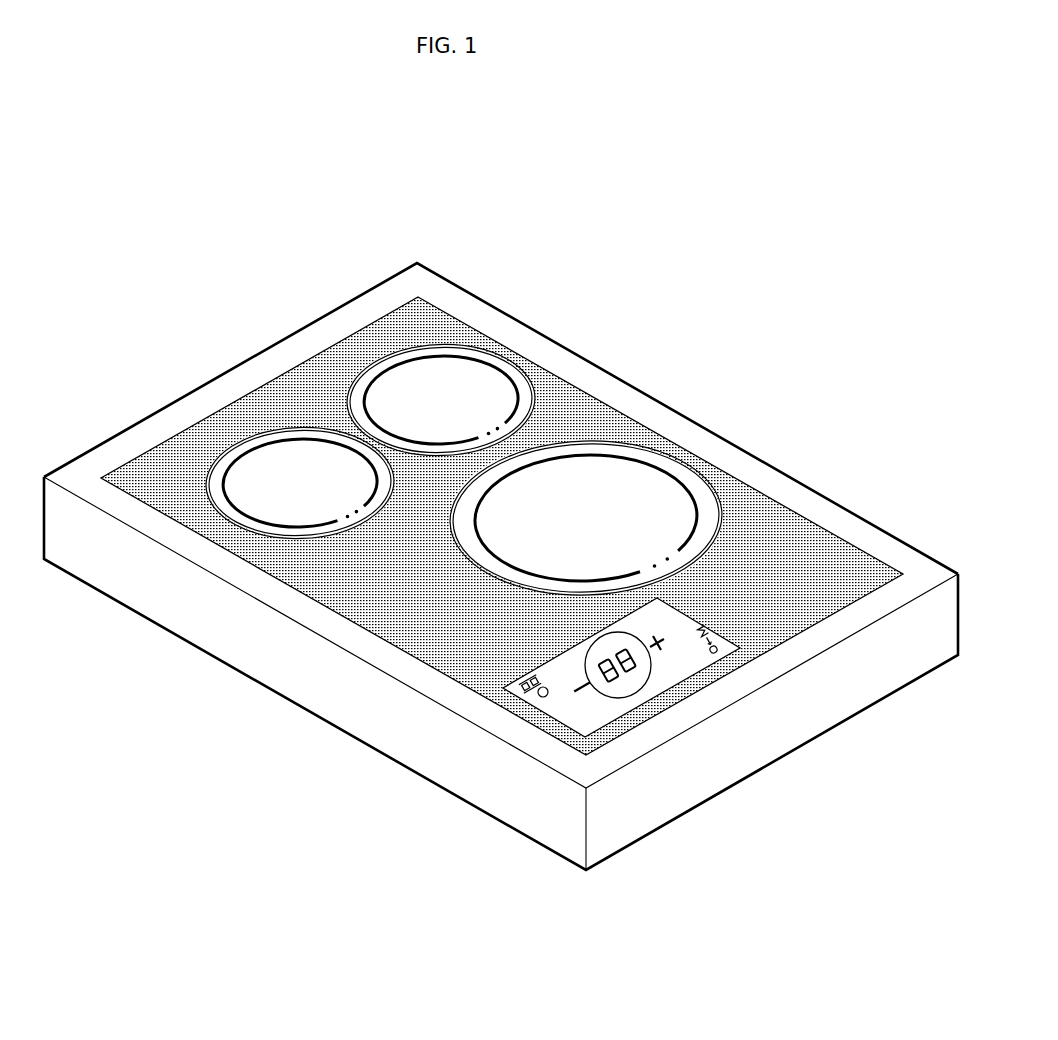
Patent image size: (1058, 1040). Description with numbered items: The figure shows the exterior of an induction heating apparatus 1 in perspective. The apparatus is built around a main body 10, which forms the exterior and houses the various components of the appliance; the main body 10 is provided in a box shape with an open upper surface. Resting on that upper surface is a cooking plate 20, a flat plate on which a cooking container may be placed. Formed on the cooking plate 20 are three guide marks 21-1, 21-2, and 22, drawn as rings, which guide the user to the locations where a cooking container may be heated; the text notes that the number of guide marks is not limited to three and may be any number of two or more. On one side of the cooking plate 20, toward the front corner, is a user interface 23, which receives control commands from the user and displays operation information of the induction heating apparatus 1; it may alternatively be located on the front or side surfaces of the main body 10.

The induction heating apparatus 1 is at (458, 148).
The main body 10 is at (330, 683).
The cooking plate 20 is at (570, 407).
The guide mark 21-1 is at (229, 448).
The guide mark 21-2 is at (375, 361).
The guide mark 22 is at (640, 443).
The user interface 23 is at (650, 690).